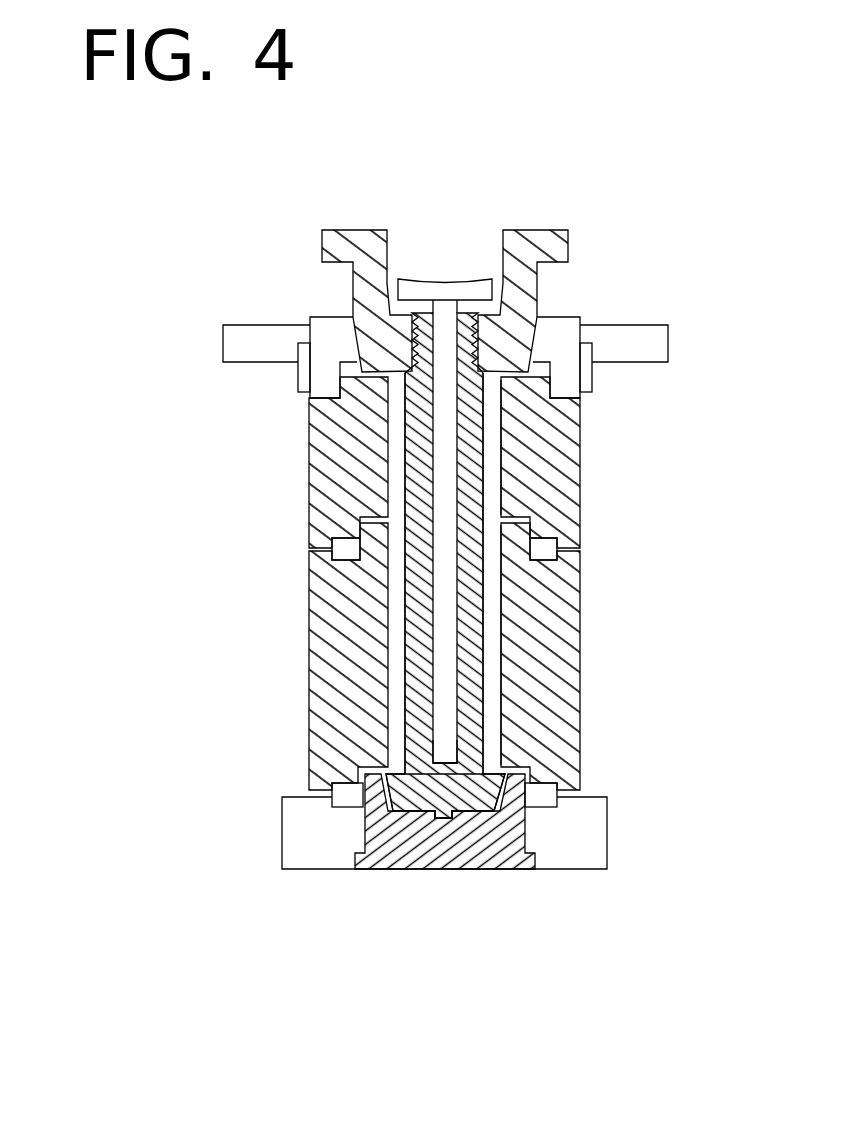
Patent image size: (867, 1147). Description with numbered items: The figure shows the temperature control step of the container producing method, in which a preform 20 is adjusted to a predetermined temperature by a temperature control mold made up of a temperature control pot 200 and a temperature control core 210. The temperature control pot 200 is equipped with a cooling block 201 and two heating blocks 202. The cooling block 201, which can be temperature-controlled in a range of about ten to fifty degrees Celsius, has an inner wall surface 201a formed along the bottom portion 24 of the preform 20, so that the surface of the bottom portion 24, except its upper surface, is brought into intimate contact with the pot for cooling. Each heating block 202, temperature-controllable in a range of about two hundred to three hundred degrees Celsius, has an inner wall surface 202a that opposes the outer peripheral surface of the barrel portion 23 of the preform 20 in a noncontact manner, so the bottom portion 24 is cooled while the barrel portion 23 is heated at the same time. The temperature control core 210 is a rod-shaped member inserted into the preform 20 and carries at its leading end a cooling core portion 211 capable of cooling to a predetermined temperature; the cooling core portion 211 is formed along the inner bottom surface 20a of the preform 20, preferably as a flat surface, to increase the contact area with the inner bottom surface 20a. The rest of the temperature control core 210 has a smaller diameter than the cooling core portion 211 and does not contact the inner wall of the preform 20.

The temperature control pot 200 is at (634, 392).
The cooling block 201 is at (390, 855).
The inner wall surface 201a is at (412, 796).
The heating block 202 is at (332, 463).
The inner wall surface 202a is at (488, 433).
The temperature control core 210 is at (442, 315).
The cooling core portion 211 is at (447, 737).
The preform 20 is at (445, 565).
The inner bottom surface 20a is at (439, 754).
The barrel portion 23 is at (410, 712).
The bottom portion 24 is at (488, 793).